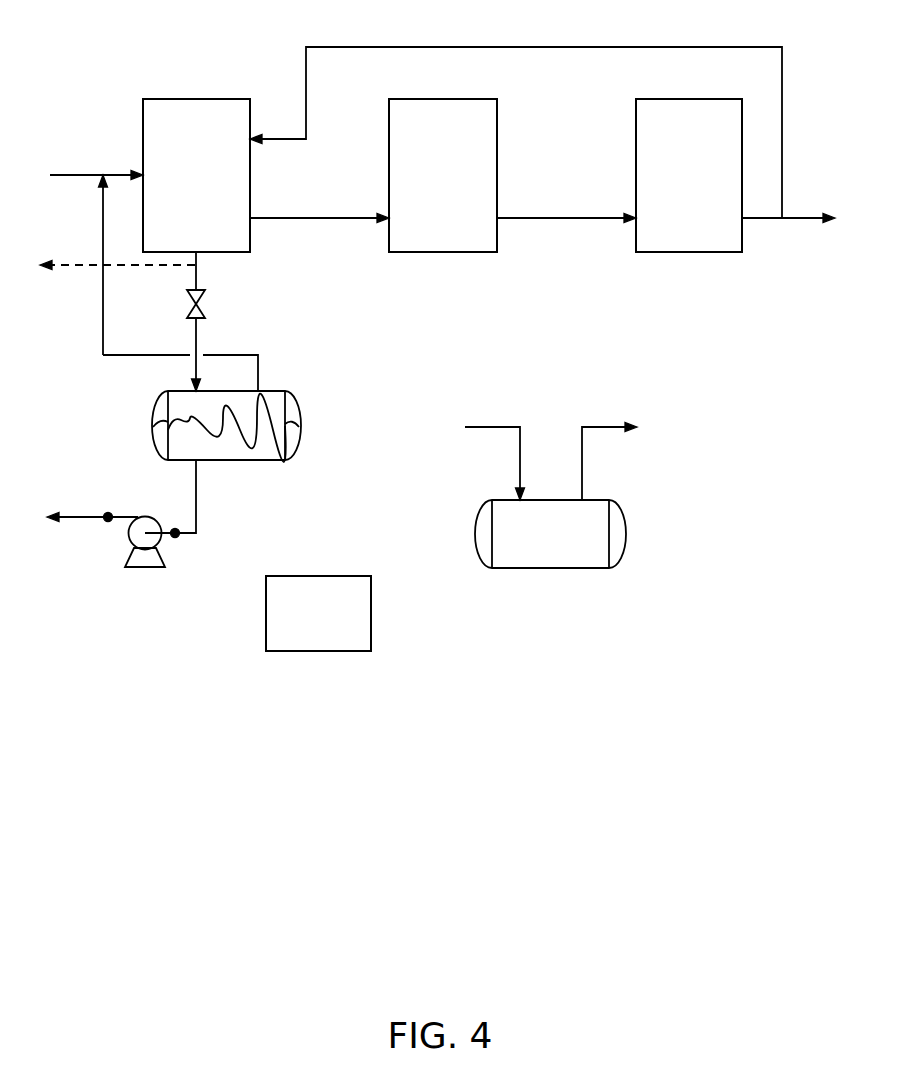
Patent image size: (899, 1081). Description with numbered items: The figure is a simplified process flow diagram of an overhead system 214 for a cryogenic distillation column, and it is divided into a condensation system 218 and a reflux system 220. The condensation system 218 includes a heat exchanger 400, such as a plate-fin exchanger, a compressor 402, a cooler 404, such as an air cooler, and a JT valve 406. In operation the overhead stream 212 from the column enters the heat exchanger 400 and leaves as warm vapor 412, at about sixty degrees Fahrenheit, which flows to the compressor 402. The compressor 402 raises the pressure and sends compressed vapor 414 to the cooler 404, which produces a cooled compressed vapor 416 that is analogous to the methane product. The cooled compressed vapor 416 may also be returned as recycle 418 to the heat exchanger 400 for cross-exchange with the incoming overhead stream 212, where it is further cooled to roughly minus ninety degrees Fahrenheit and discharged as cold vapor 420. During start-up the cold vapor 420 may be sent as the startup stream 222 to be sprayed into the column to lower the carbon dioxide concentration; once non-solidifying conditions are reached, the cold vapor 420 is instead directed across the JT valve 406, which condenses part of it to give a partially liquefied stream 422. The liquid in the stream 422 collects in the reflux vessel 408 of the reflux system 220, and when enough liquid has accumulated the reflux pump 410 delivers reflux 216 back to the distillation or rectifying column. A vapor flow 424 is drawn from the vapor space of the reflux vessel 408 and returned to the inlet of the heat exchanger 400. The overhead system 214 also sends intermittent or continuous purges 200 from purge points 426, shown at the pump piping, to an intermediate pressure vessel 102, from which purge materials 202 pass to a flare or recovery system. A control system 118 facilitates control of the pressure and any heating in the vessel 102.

The condensation system 218 is at (100, 50).
The overhead stream 212 is at (72, 178).
The startup stream 222 is at (67, 268).
The vapor flow 424 is at (103, 345).
The cold vapor 420 is at (199, 282).
The JT valve 406 is at (188, 306).
The partially liquefied stream 422 is at (198, 322).
The recycle 418 is at (680, 47).
The warm vapor 412 is at (318, 220).
The compressed vapor 414 is at (556, 220).
The cooled compressed vapor 416 is at (805, 220).
The heat exchanger 400 is at (196, 175).
The compressor 402 is at (443, 175).
The cooler 404 is at (689, 175).
The reflux vessel 408 is at (240, 461).
The reflux pump 410 is at (145, 570).
The purge points 426 is at (108, 514).
The reflux 216 is at (80, 512).
The reflux system 220 is at (88, 581).
The control system 118 is at (318, 613).
The intermediate pressure vessel 102 is at (540, 570).
The purges 200 is at (485, 425).
The purge materials 202 is at (590, 425).
The overhead system 214 is at (432, 1000).